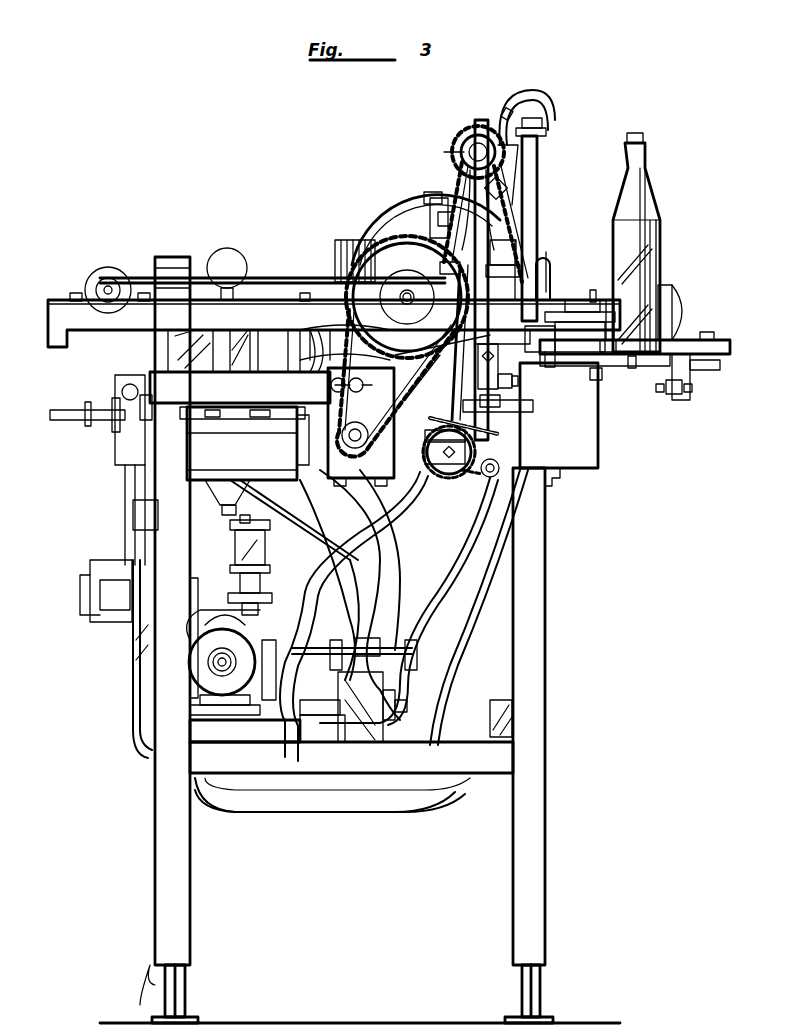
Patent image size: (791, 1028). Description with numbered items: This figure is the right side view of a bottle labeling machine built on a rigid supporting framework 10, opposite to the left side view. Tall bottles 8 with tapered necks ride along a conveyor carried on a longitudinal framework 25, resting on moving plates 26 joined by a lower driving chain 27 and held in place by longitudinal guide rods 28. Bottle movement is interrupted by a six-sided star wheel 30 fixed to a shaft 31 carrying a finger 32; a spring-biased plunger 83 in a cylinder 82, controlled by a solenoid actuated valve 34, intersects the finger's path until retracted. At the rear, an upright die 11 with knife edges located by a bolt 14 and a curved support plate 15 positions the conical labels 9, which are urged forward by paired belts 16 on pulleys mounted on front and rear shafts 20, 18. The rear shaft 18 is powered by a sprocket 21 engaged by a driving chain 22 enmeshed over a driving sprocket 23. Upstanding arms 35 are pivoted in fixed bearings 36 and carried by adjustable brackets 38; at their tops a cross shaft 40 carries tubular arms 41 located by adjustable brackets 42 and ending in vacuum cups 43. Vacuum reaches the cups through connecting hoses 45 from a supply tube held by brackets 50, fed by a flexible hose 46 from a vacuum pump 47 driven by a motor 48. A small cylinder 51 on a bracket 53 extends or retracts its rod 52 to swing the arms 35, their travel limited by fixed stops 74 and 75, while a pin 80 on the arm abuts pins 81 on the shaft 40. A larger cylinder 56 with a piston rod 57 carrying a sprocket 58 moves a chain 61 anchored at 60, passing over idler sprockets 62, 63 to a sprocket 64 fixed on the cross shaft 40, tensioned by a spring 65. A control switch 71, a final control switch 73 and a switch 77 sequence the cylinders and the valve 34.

The bottle 8 is at (634, 252).
The label 9 is at (335, 254).
The supporting framework 10 is at (548, 514).
The upright die 11 is at (430, 228).
The bolt 14 is at (420, 200).
The curved support plate 15 is at (466, 342).
The belt 16 is at (262, 282).
The rear shaft 18 is at (404, 305).
The front shaft 20 is at (106, 285).
The sprocket 21 is at (410, 303).
The driving chain 22 is at (352, 340).
The driving sprocket 23 is at (362, 444).
The conveyor framework 25 is at (668, 392).
The moving plate 26 is at (678, 345).
The lower driving chain 27 is at (634, 368).
The guide rod 28 is at (606, 300).
The star wheel 30 is at (594, 300).
The shaft 31 is at (588, 345).
The finger 32 is at (575, 312).
The solenoid actuated valve 34 is at (562, 352).
The arm 35 is at (488, 228).
The bearing 36 is at (500, 352).
The adjustable bracket 38 is at (498, 412).
The cross shaft 40 is at (461, 145).
The tubular arm 41 is at (450, 185).
The adjustable bracket 42 is at (470, 128).
The vacuum cup 43 is at (407, 297).
The connecting hose 45 is at (528, 96).
The flexible hose 46 is at (538, 206).
The vacuum pump 47 is at (232, 649).
The motor 48 is at (262, 668).
The bracket 50 is at (545, 130).
The small cylinder 51 is at (395, 422).
The reciprocable rod 52 is at (440, 474).
The bracket 53 is at (328, 366).
The larger cylinder 56 is at (246, 466).
The piston rod 57 is at (400, 510).
The sprocket 58 is at (486, 478).
The chain anchor 60 is at (500, 495).
The chain 61 is at (478, 496).
The idler sprocket 62 is at (505, 424).
The idler sprocket 63 is at (430, 342).
The sprocket 64 is at (484, 130).
The tension spring 65 is at (520, 250).
The control switch 71 is at (430, 190).
The final control switch 73 is at (522, 198).
The fixed stop 74 is at (464, 419).
The fixed stop 75 is at (498, 398).
The switch 77 is at (516, 248).
The pin 80 is at (504, 178).
The pin 81 is at (458, 146).
The cylinder 82 is at (550, 268).
The plunger 83 is at (552, 295).